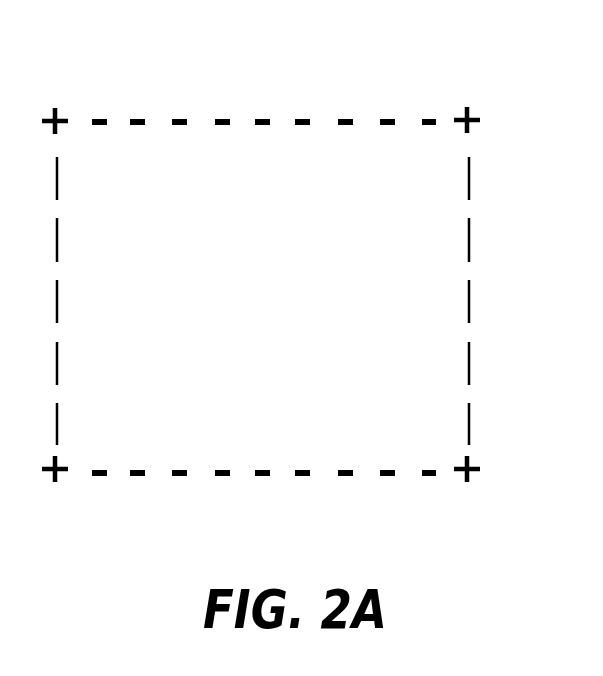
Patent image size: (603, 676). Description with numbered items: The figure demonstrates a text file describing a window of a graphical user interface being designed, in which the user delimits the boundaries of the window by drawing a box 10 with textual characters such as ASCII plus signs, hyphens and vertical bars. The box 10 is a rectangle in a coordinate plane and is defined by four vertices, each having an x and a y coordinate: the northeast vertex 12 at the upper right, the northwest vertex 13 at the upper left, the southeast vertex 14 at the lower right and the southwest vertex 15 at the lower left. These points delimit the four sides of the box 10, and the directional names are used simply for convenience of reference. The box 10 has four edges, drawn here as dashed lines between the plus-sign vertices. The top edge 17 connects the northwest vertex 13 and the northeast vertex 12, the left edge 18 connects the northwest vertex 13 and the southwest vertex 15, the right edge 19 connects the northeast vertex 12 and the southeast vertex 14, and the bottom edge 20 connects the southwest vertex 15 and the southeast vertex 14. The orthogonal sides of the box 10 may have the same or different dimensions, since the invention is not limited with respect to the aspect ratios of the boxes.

The box 10 is at (305, 275).
The northeast vertex 12 is at (468, 107).
The northwest vertex 13 is at (57, 107).
The southeast vertex 14 is at (468, 472).
The southwest vertex 15 is at (55, 472).
The top edge 17 is at (240, 143).
The left edge 18 is at (75, 307).
The right edge 19 is at (447, 348).
The bottom edge 20 is at (220, 452).